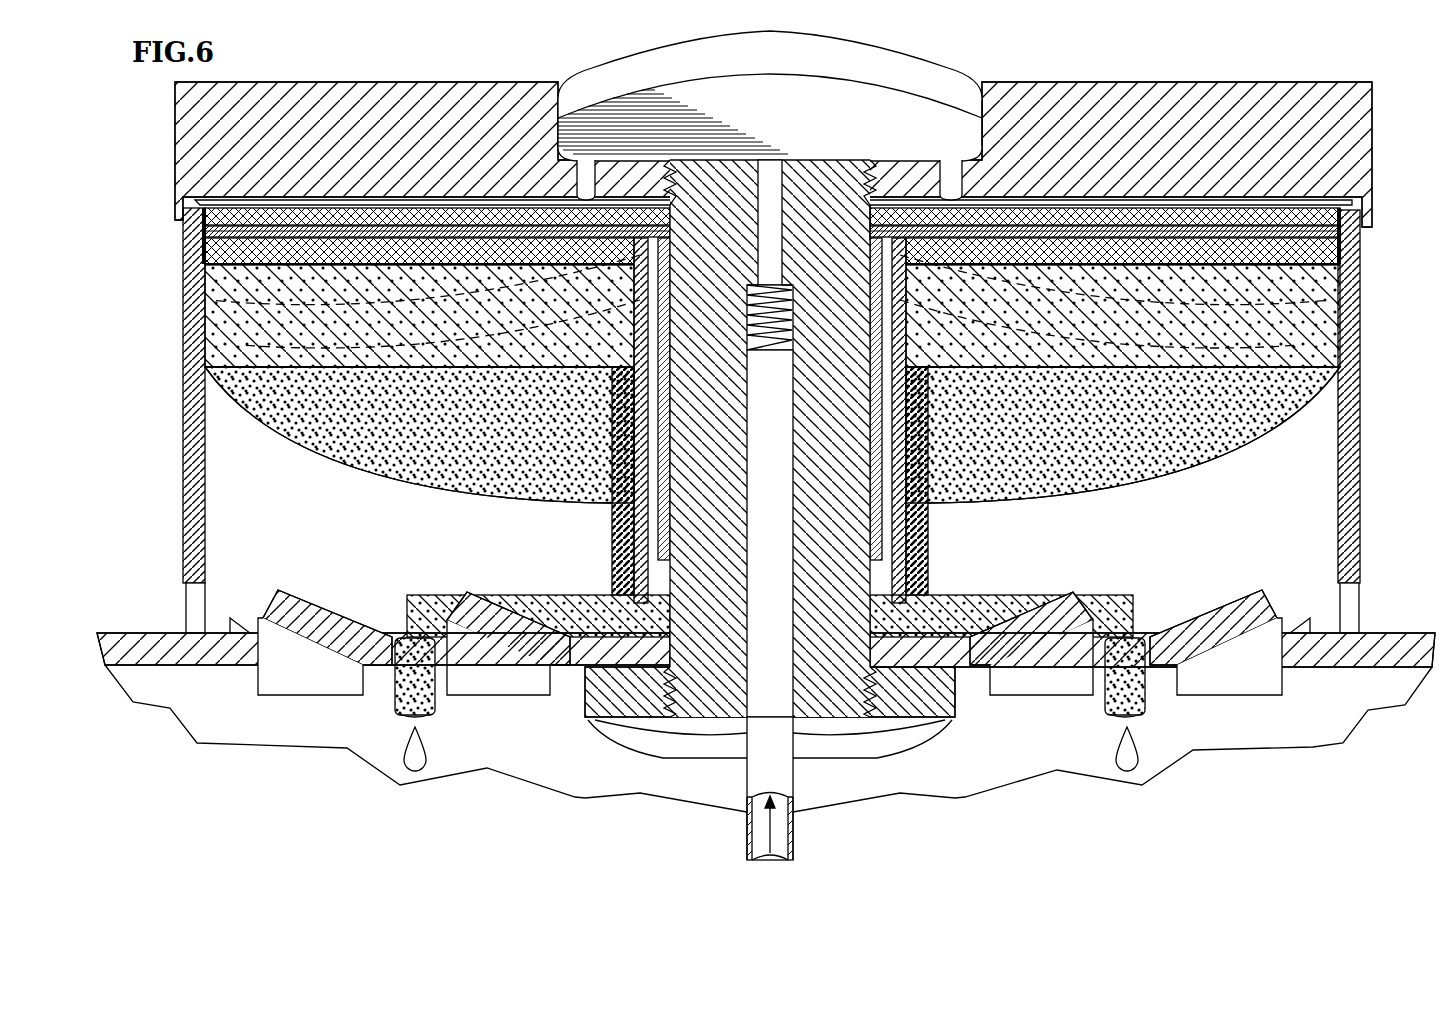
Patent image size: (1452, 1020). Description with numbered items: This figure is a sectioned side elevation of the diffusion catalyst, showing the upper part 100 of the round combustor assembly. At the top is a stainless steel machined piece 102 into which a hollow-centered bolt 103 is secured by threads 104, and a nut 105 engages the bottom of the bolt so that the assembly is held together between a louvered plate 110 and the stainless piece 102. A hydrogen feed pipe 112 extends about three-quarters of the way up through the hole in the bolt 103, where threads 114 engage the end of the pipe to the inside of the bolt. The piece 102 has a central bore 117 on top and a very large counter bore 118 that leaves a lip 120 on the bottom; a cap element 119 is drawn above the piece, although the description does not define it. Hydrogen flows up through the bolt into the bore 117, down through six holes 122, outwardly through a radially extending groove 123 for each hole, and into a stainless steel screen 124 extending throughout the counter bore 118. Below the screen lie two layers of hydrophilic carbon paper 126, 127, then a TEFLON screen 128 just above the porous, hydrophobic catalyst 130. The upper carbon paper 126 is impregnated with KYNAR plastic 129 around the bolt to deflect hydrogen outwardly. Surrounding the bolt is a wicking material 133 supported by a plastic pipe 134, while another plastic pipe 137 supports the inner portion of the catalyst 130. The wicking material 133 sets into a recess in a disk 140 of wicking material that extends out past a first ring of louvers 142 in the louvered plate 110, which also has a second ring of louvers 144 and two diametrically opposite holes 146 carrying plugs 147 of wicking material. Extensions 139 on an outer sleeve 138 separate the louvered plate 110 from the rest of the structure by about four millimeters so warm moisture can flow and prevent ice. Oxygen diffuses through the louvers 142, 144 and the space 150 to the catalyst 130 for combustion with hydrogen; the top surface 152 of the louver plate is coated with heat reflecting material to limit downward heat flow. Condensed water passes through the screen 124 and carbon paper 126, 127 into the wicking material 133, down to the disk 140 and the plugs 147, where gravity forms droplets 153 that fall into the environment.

The upper part 100 is at (326, 68).
The stainless steel machined piece 102 is at (456, 90).
The hollow-centered bolt 103 is at (829, 156).
The threads 104 is at (893, 190).
The nut 105 is at (895, 738).
The louvered plate 110 is at (1375, 631).
The hydrogen feed pipe 112 is at (795, 774).
The threads 114 is at (776, 335).
The central bore 117 is at (977, 102).
The counter bore 118 is at (407, 320).
The cap 119 is at (752, 60).
The lip 120 is at (184, 216).
The holes 122 is at (582, 182).
The radially extending groove 123 is at (446, 206).
The stainless steel screen 124 is at (1292, 210).
The hydrophilic carbon paper 126 is at (1350, 233).
The hydrophilic carbon paper 127 is at (1356, 247).
The TEFLON screen 128 is at (1216, 270).
The KYNAR plastic 129 is at (686, 240).
The catalyst 130 is at (1288, 350).
The wicking material 133 is at (870, 440).
The plastic pipe 134 is at (929, 592).
The plastic pipe 137 is at (929, 526).
The outer sleeve 138 is at (1340, 470).
The extensions 139 is at (228, 612).
The disk of wicking material 140 is at (1090, 598).
The first ring of louvers 142 is at (470, 594).
The second ring of louvers 144 is at (292, 590).
The holes 146 is at (402, 638).
The plugs of wicking material 147 is at (437, 710).
The space 150 is at (1128, 512).
The top surface 152 is at (166, 630).
The droplets 153 is at (408, 752).